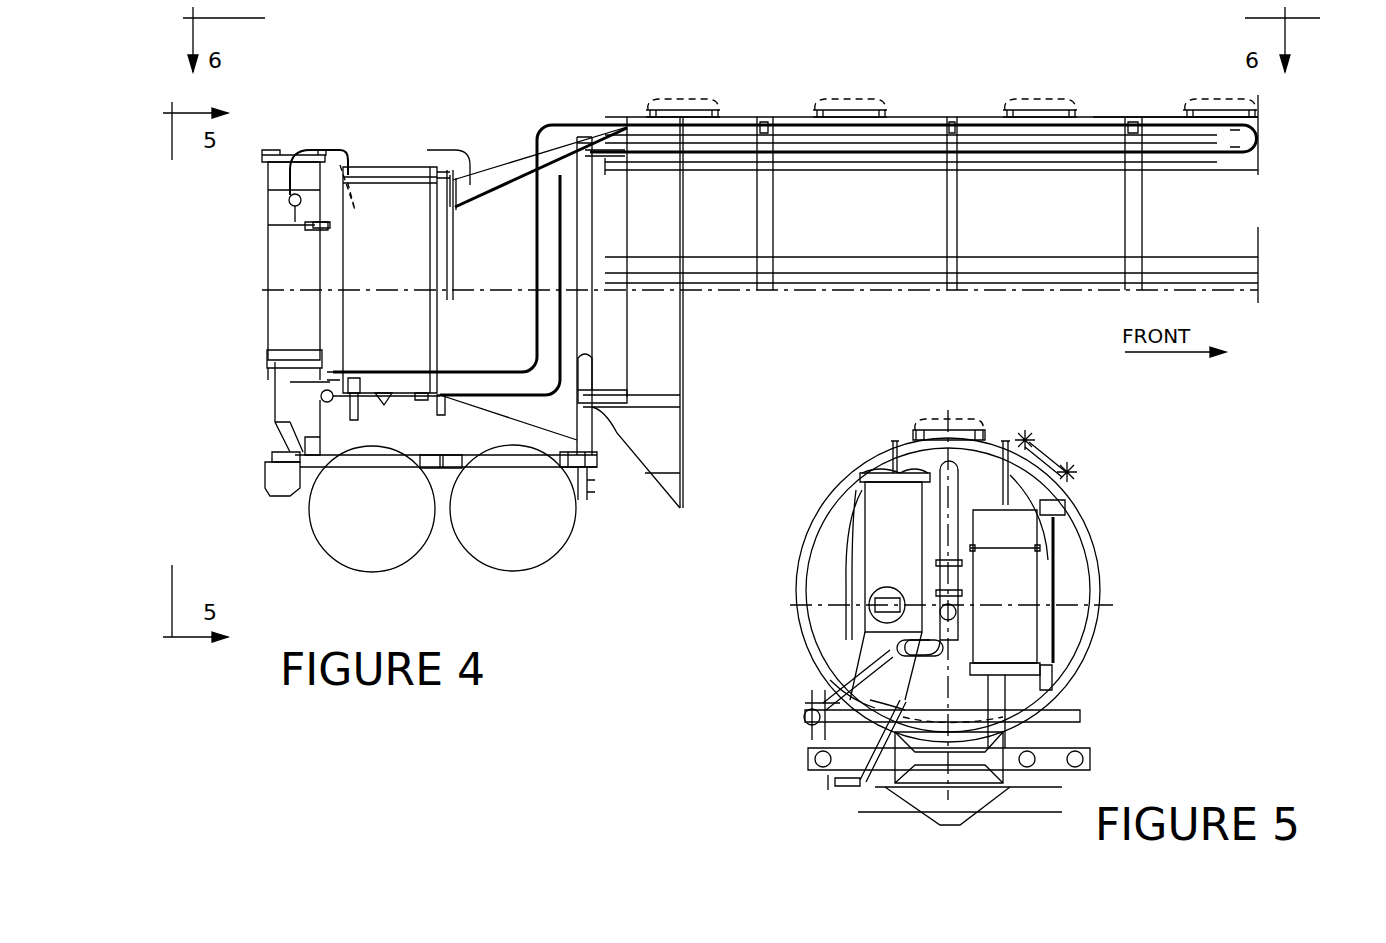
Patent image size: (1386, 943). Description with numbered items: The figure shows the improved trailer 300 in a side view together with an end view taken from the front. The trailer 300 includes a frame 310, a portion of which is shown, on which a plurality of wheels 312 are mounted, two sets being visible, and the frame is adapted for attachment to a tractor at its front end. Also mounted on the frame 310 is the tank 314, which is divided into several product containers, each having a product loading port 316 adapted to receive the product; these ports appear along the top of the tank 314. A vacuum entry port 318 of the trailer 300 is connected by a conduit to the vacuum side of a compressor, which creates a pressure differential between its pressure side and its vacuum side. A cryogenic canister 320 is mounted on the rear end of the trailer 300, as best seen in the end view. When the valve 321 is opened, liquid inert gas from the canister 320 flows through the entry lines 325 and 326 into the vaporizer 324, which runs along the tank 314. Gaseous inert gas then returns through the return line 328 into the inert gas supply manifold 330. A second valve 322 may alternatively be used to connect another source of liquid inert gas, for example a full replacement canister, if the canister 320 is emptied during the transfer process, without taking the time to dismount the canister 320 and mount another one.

In FIG. 4, the trailer 300 is at (930, 85).
In FIG. 5, the trailer 300 is at (1123, 527).
In FIG. 4, the frame 310 is at (300, 478).
In FIG. 4, the wheels 312 is at (345, 568).
In FIG. 4, the tank 314 is at (1095, 103).
In FIG. 5, the tank 314 is at (1095, 626).
In FIG. 4, the product loading port 316 is at (680, 100).
In FIG. 5, the product loading port 316 is at (960, 426).
In FIG. 5, the vacuum entry port 318 is at (898, 647).
In FIG. 5, the cryogenic canister 320 is at (1040, 594).
In FIG. 4, the valve 321 is at (295, 196).
In FIG. 5, the valve 321 is at (1053, 507).
In FIG. 4, the valve 322 is at (330, 380).
In FIG. 4, the vaporizer 324 is at (1262, 135).
In FIG. 4, the entry line 325 is at (325, 168).
In FIG. 5, the entry line 325 is at (1055, 650).
In FIG. 4, the entry line 326 is at (548, 128).
In FIG. 4, the return line 328 is at (565, 312).
In FIG. 5, the inert gas supply manifold 330 is at (822, 742).